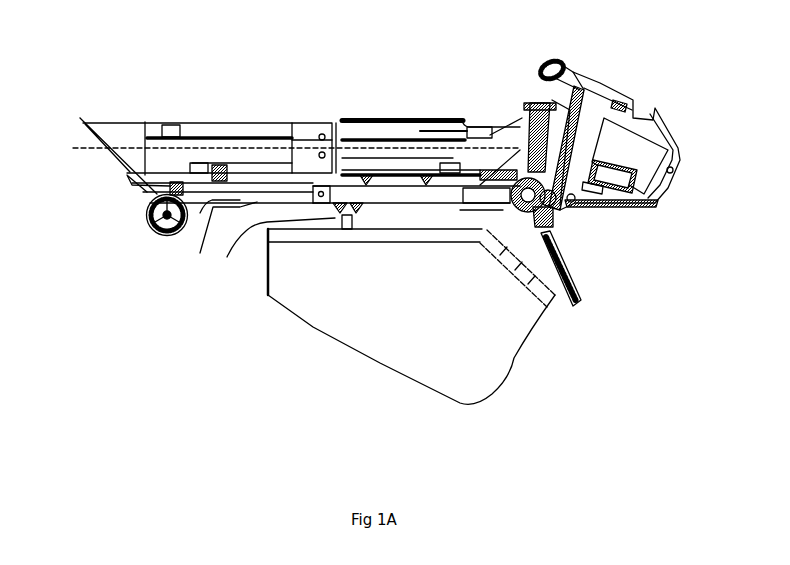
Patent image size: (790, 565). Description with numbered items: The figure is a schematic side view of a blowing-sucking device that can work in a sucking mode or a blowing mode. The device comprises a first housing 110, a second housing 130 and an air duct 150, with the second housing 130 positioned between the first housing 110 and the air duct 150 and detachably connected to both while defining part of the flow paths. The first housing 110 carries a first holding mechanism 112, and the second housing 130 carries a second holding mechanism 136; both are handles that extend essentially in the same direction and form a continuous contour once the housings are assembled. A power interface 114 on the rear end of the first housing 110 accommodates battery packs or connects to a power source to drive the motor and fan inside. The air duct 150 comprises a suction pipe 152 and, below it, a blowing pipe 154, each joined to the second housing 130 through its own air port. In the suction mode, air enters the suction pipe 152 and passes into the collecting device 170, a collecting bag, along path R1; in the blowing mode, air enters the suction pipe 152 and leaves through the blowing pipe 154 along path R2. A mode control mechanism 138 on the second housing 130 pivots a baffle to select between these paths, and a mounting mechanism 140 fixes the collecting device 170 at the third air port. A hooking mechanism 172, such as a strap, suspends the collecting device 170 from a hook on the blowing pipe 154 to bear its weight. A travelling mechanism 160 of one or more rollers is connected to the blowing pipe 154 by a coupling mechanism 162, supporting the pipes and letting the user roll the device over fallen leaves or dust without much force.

The first housing 110 is at (686, 127).
The first holding mechanism 112 is at (650, 118).
The power interface 114 is at (635, 205).
The second housing 130 is at (525, 85).
The second holding mechanism 136 is at (576, 62).
The mode control mechanism 138 is at (557, 215).
The mounting mechanism 140 is at (578, 268).
The air duct 150 is at (300, 110).
The suction pipe 152 is at (117, 133).
The blowing pipe 154 is at (155, 194).
The travelling mechanism 160 is at (150, 234).
The coupling mechanism 162 is at (208, 228).
The collecting device 170 is at (510, 338).
The hooking mechanism 172 is at (229, 259).
The suction path R1 is at (509, 264).
The blowing path R2 is at (467, 197).